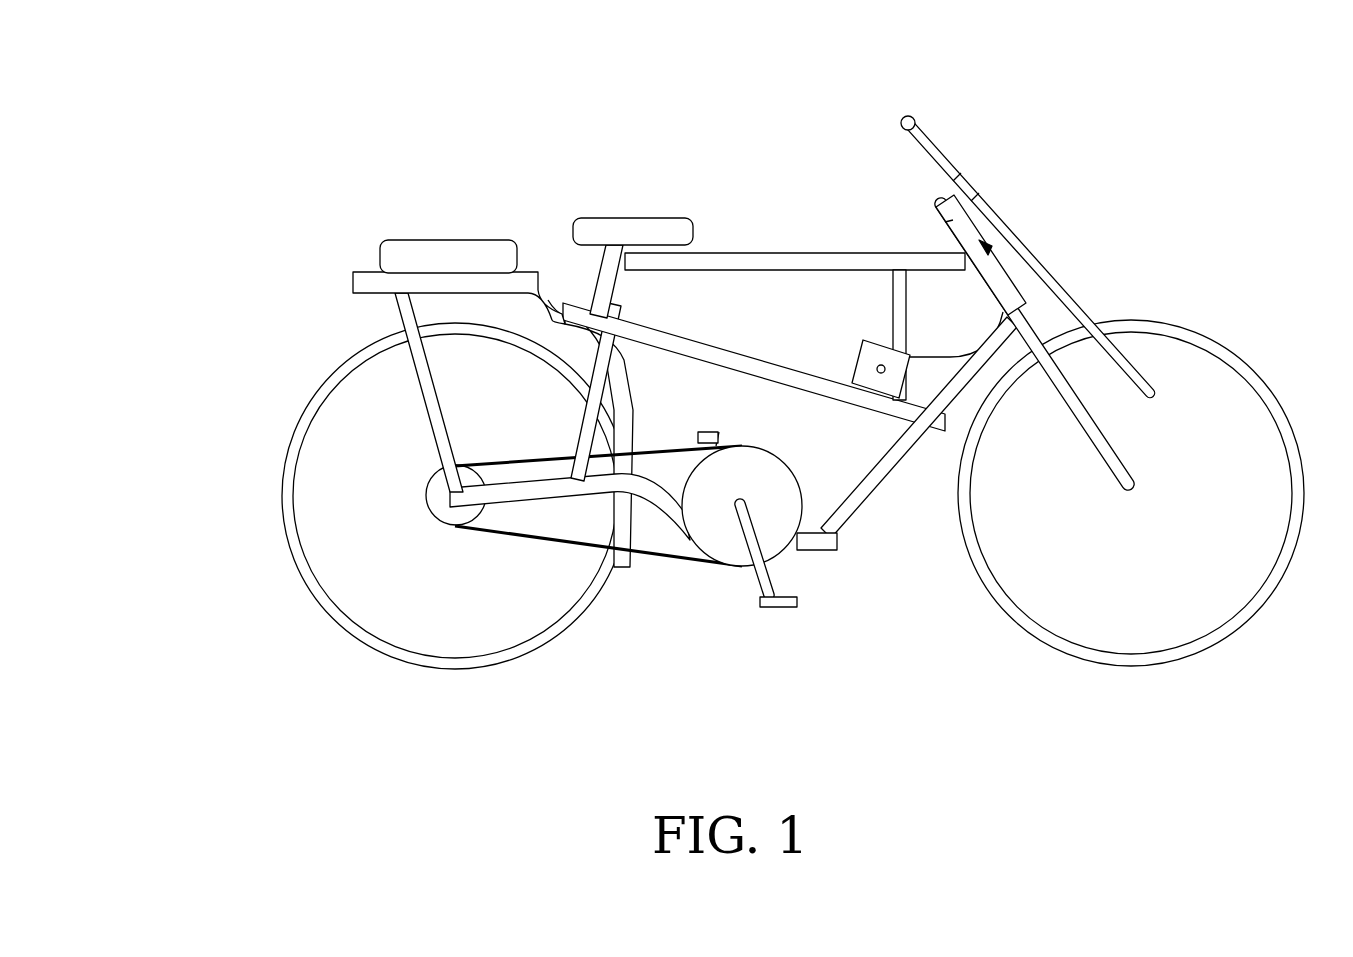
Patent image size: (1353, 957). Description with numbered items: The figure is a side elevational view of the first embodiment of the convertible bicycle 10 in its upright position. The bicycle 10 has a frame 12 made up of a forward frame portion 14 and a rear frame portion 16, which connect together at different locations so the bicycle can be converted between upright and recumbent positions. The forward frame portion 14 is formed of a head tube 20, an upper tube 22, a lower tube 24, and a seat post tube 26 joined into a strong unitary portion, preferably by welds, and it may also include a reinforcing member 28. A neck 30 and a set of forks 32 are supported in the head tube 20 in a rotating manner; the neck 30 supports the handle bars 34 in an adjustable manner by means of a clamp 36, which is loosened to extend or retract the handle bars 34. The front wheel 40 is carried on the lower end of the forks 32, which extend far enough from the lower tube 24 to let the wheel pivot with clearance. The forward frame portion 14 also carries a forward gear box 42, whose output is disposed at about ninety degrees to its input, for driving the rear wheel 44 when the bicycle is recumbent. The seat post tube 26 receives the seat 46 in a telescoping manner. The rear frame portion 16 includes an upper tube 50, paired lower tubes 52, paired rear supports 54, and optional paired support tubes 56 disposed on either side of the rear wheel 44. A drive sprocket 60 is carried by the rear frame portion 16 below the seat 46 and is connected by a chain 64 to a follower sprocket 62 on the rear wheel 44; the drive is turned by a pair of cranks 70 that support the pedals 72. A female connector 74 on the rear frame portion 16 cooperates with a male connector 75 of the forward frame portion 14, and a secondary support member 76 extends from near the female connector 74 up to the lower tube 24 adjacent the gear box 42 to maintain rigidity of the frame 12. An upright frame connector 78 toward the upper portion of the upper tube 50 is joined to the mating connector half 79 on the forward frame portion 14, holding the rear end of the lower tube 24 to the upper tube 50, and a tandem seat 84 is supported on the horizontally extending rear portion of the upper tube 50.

The bicycle 10 is at (288, 183).
The frame 12 is at (783, 279).
The forward frame portion 14 is at (1005, 228).
The rear frame portion 16 is at (424, 287).
The head tube 20 is at (997, 283).
The upper tube 22 is at (795, 256).
The lower tube 24 is at (763, 365).
The seat post tube 26 is at (609, 290).
The reinforcing member 28 is at (893, 300).
The neck 30 is at (938, 208).
The forks 32 is at (1113, 465).
The handle bars 34 is at (938, 148).
The clamp 36 is at (978, 192).
The front wheel 40 is at (1275, 408).
The forward gear box 42 is at (862, 358).
The rear wheel 44 is at (285, 506).
The seat 46 is at (642, 220).
The upper tube 50 is at (523, 312).
The lower tubes 52 is at (532, 506).
The rear supports 54 is at (437, 430).
The support tubes 56 is at (575, 437).
The drive sprocket 60 is at (718, 537).
The follower sprocket 62 is at (440, 513).
The chain 64 is at (590, 540).
The cranks 70 is at (740, 443).
The pedals 72 is at (780, 607).
The female connector 74 is at (817, 543).
The male connector 75 is at (557, 307).
The secondary support member 76 is at (867, 483).
The upright frame connector 78 is at (577, 333).
The connector half 79 is at (563, 316).
The tandem seat 84 is at (440, 248).